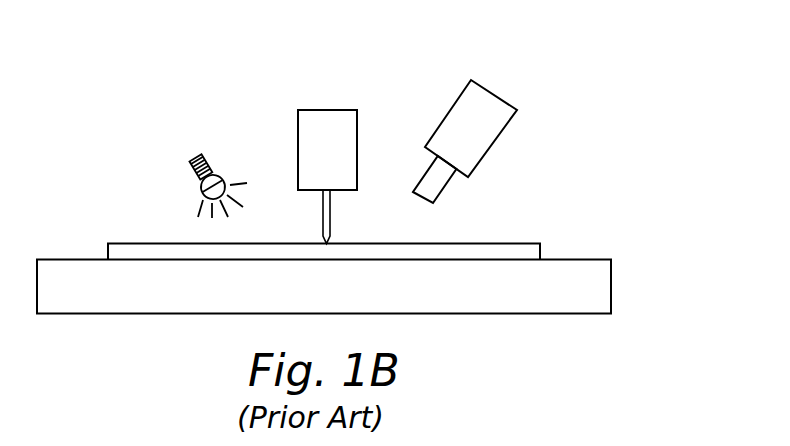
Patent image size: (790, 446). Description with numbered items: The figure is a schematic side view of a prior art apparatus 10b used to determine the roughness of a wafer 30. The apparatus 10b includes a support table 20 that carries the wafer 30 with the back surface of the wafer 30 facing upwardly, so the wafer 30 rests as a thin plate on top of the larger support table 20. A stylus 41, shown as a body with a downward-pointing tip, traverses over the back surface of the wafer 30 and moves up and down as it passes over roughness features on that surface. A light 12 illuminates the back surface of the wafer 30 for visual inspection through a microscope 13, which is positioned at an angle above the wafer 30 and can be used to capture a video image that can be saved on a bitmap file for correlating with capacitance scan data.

The apparatus 10b is at (639, 82).
The light 12 is at (200, 190).
The microscope 13 is at (490, 98).
The support table 20 is at (608, 286).
The wafer 30 is at (541, 252).
The stylus 41 is at (341, 118).